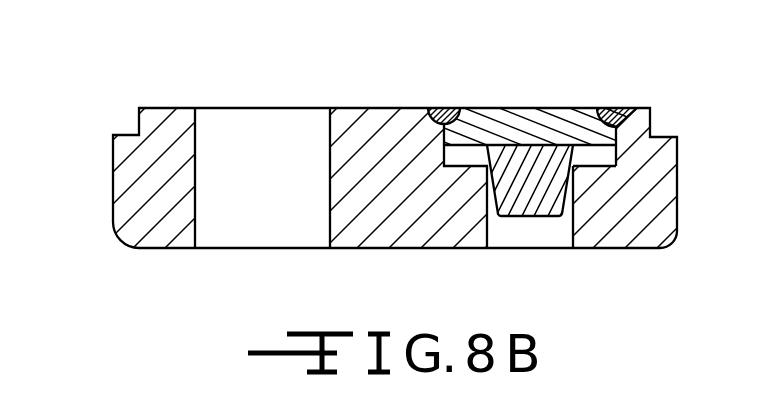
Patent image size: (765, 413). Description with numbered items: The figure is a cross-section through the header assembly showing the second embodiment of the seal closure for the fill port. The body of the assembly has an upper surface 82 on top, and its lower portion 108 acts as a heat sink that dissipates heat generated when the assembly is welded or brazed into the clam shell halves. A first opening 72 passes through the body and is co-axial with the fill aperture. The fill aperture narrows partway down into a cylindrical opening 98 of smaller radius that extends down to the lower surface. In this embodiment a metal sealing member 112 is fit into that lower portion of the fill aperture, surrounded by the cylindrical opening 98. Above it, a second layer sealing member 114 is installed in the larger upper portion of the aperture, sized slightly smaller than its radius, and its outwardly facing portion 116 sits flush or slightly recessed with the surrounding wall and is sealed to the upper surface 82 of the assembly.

The first opening 72 is at (245, 120).
The upper surface 82 is at (392, 108).
The cylindrical opening 98 is at (502, 235).
The lower portion 108 is at (115, 228).
The metal sealing member 112 is at (555, 235).
The second layer sealing member 114 is at (568, 121).
The outwardly facing portion 116 is at (512, 107).